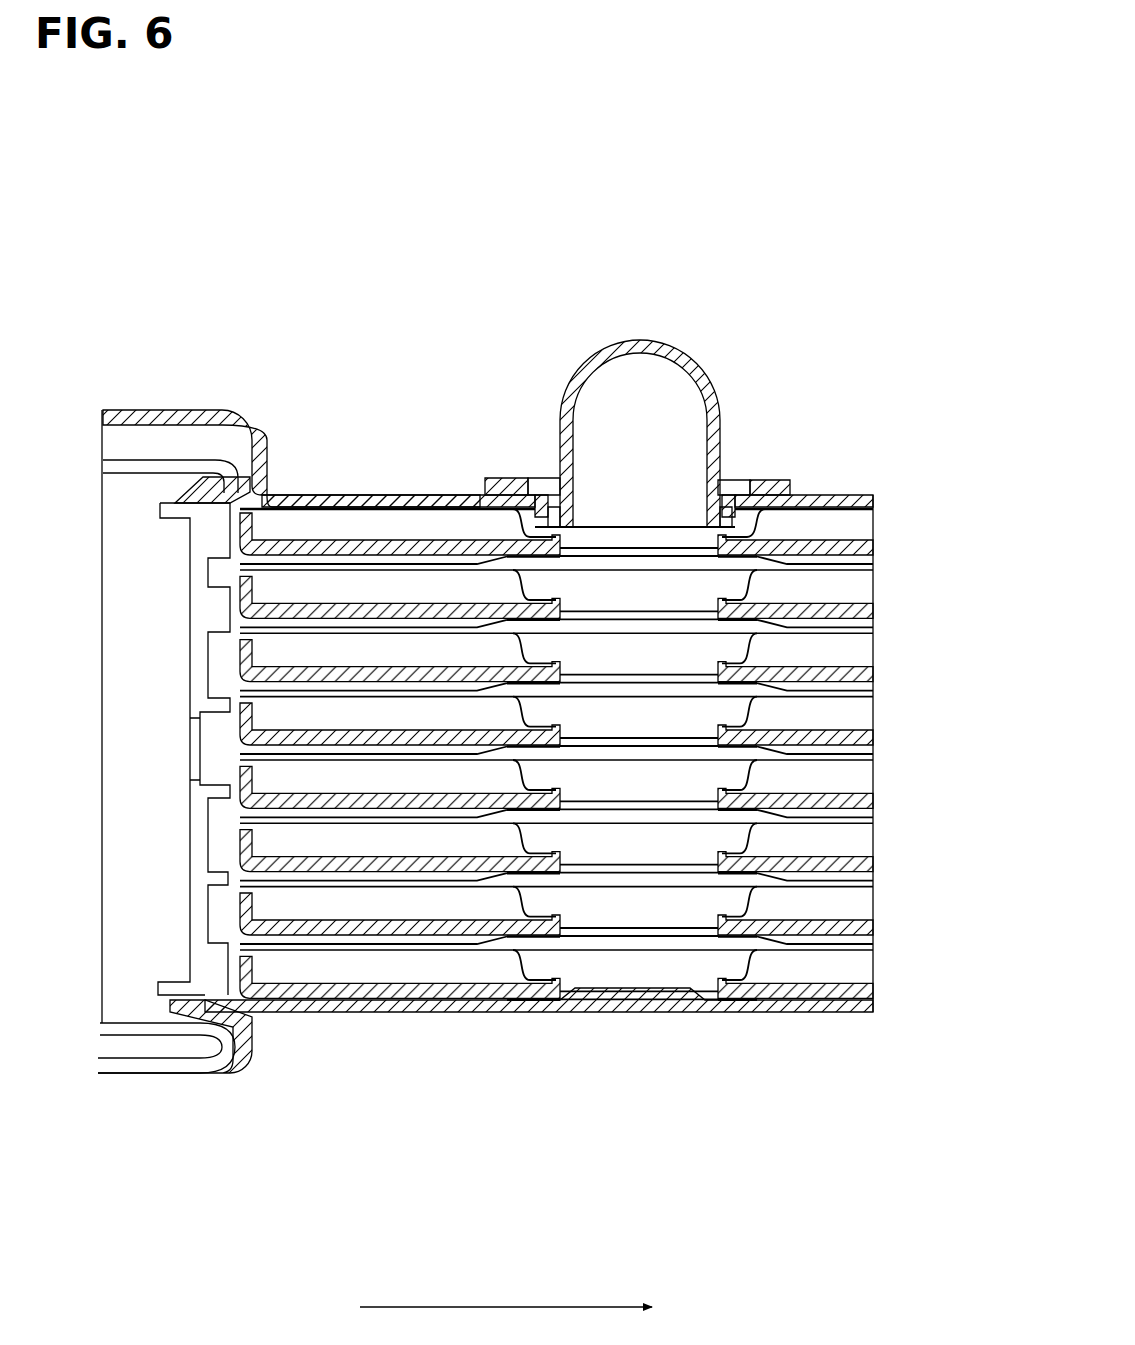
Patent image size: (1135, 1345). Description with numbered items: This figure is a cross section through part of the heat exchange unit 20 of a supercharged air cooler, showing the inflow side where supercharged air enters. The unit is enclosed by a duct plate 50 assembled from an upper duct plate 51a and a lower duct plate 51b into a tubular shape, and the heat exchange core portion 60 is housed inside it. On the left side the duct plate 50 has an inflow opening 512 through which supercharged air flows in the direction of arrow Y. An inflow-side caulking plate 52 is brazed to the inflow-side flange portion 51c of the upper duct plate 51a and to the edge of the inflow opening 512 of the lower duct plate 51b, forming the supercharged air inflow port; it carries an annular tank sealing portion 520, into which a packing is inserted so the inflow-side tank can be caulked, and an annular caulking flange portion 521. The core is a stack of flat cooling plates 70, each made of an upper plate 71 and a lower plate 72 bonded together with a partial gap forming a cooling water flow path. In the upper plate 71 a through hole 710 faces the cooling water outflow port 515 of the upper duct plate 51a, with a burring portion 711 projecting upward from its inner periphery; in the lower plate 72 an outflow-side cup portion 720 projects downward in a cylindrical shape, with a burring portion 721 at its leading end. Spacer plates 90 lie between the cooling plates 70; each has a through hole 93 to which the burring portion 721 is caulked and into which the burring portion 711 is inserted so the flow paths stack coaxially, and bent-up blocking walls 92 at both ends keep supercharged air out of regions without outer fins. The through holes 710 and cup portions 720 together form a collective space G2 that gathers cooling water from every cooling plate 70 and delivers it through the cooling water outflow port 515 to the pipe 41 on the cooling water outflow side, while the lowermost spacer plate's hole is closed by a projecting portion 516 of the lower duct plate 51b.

The heat exchange unit 20 is at (843, 290).
The pipe on cooling water outflow side 41 is at (650, 340).
The duct plate 50 is at (855, 495).
The upper duct plate 51a is at (822, 493).
The lower duct plate 51b is at (795, 1012).
The inflow-side flange portion 51c is at (262, 432).
The inflow-side caulking plate 52 is at (160, 408).
The inflow opening 512 is at (228, 996).
The cooling water outflow port 515 is at (690, 505).
The projecting portion 516 is at (630, 1013).
The tank sealing portion 520 is at (240, 430).
The caulking flange portion 521 is at (100, 410).
The heat exchange core portion 60 is at (318, 498).
The cooling plate 70 is at (434, 398).
The upper plate 71 is at (347, 553).
The lower plate 72 is at (403, 566).
The through hole 710 is at (500, 487).
The burring portion 711 is at (578, 547).
The outflow-side cup portion 720 is at (513, 590).
The burring portion 721 is at (595, 556).
The spacer plate 90 is at (298, 534).
The blocking wall 92 is at (238, 523).
The through hole 93 is at (560, 617).
The collective space G2 is at (660, 713).